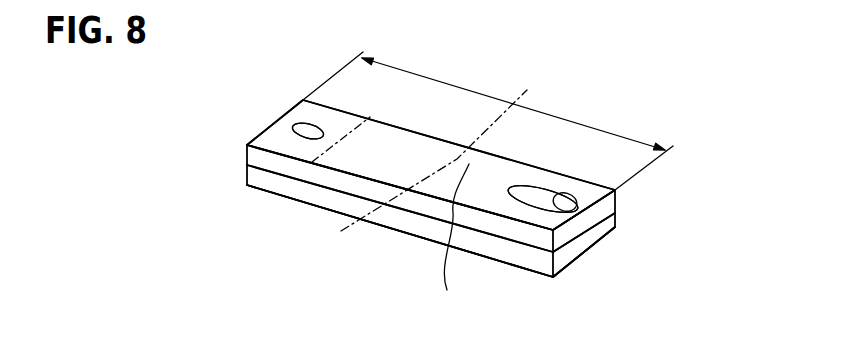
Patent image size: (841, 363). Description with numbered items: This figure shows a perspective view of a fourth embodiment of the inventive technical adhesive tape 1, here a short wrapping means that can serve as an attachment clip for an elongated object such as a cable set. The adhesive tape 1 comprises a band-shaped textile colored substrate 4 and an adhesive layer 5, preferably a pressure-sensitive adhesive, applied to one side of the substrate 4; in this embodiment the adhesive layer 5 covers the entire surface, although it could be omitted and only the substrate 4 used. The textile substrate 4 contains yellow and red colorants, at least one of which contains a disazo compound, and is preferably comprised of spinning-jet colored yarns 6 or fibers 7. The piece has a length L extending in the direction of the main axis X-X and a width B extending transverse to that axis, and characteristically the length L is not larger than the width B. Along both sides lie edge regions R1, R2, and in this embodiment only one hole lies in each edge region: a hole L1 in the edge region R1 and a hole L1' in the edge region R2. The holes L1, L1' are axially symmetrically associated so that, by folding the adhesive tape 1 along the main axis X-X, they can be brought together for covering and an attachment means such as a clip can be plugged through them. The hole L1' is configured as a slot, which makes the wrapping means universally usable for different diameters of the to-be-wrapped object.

The adhesive tape 1 is at (386, 260).
The textile colored substrate 4 is at (262, 184).
The adhesive layer 5 is at (401, 150).
The spinning-jet colored yarns 6 is at (431, 221).
The spinning-jet colored fibers 7 is at (431, 198).
The hole L1 is at (266, 107).
The hole configured as a slot L1' is at (586, 229).
The edge region R1 is at (304, 112).
The edge region R2 is at (528, 210).
The main axis X is at (518, 86).
The width B is at (568, 119).
The length L is at (456, 239).